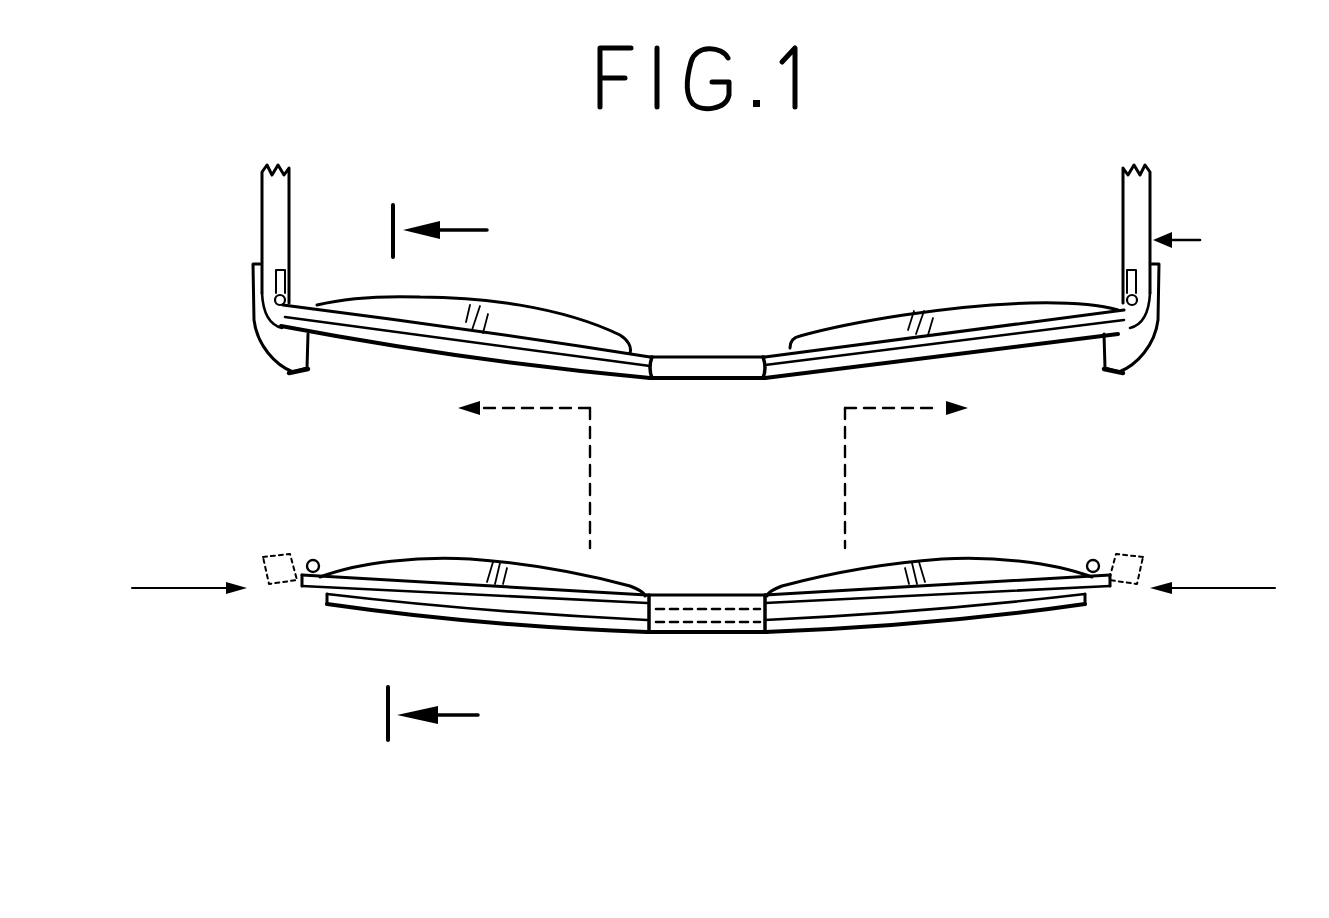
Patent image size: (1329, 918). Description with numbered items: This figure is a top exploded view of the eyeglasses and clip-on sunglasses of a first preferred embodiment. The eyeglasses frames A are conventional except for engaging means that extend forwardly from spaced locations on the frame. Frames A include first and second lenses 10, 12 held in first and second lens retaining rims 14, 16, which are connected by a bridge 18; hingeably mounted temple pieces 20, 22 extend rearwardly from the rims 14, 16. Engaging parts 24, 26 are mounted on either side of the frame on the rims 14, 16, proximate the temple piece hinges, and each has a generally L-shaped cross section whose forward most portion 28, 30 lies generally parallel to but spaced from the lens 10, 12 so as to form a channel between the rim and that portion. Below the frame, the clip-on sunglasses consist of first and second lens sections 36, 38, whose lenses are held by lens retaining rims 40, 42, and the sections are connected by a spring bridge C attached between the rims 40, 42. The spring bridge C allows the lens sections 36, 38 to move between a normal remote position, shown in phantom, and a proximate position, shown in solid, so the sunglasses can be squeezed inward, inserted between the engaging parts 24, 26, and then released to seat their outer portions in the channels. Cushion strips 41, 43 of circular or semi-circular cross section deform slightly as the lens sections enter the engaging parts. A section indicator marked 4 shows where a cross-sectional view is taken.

The first lens 10 is at (577, 333).
The second lens 12 is at (987, 315).
The first lens retaining rim 14 is at (396, 341).
The second lens retaining rim 16 is at (1007, 350).
The bridge 18 is at (712, 367).
The temple piece 20 is at (290, 200).
The temple piece 22 is at (1138, 200).
The engaging part 24 is at (262, 335).
The engaging part 26 is at (1160, 333).
The forward most portion 28 is at (293, 373).
The forward most portion 30 is at (1112, 382).
The first lens section 36 is at (457, 567).
The second lens section 38 is at (960, 577).
The lens retaining rim 40 is at (377, 595).
The cushion strip 41 is at (315, 560).
The lens retaining rim 42 is at (1033, 597).
The cushion strip 43 is at (1095, 560).
The eyeglasses frames A is at (1200, 240).
The spring bridge C is at (702, 578).
The section line for FIG. 4 is at (457, 472).